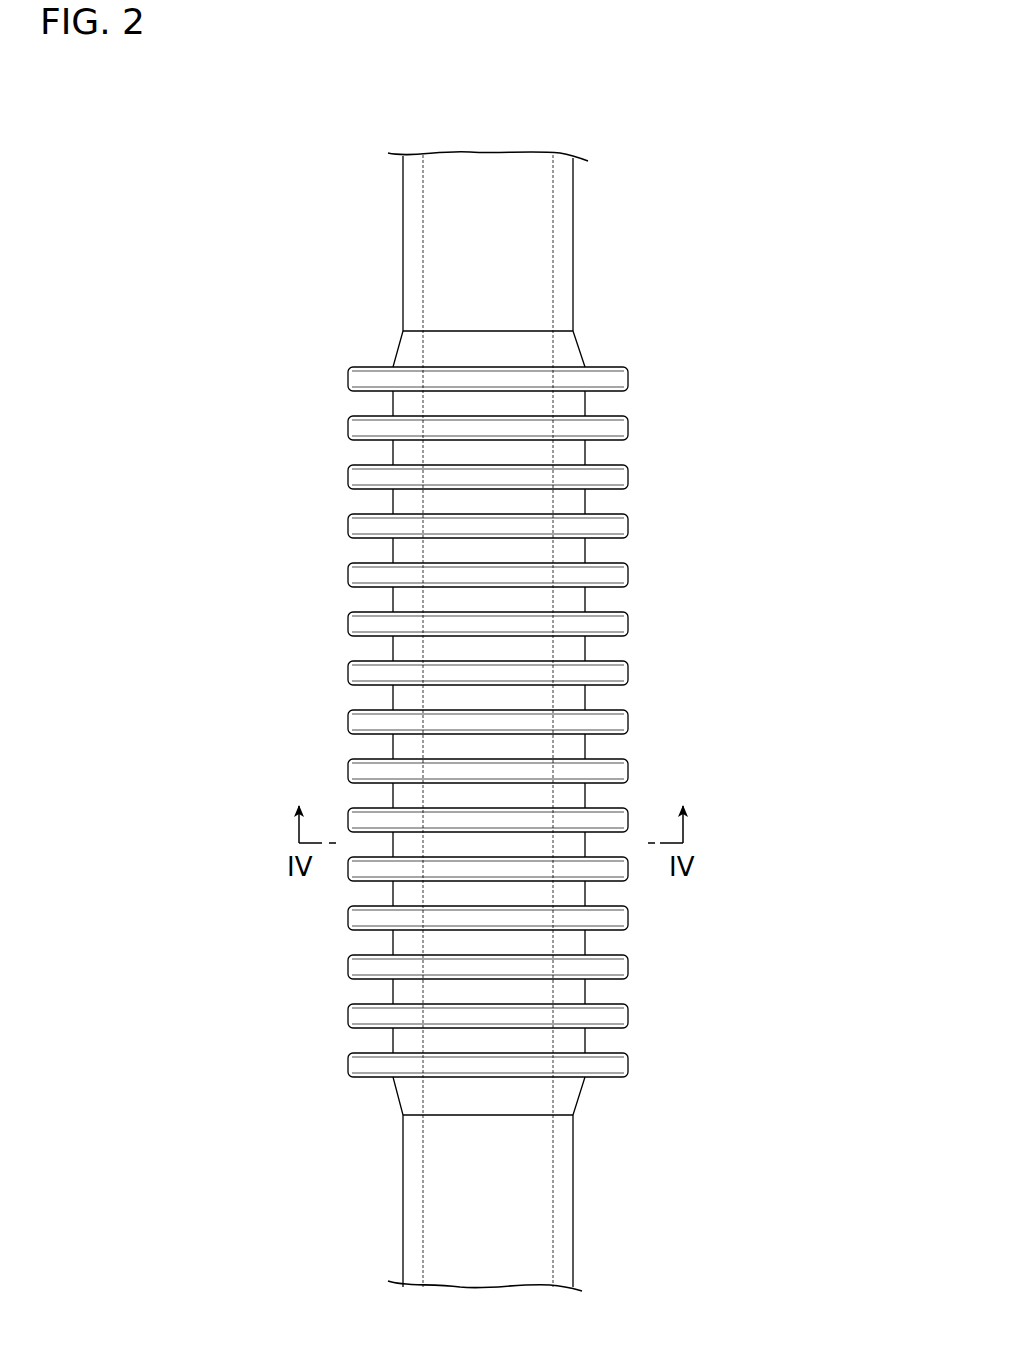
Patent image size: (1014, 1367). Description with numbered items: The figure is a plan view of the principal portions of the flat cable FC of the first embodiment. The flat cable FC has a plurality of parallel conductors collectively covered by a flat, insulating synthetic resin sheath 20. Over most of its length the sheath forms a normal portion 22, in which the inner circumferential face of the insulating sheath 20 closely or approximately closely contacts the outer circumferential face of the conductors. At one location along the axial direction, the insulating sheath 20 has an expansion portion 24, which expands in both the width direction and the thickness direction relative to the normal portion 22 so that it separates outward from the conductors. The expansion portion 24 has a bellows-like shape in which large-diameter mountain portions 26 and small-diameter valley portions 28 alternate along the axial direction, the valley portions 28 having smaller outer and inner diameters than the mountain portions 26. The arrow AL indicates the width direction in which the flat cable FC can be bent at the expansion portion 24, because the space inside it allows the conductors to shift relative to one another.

The insulating sheath 20 is at (465, 721).
The normal portion 22 is at (403, 220).
The expansion portion 24 is at (465, 722).
The mountain portions 26 is at (348, 570).
The valley portions 28 is at (573, 455).
The arrow AL is at (822, 275).
The flat cable FC is at (288, 360).